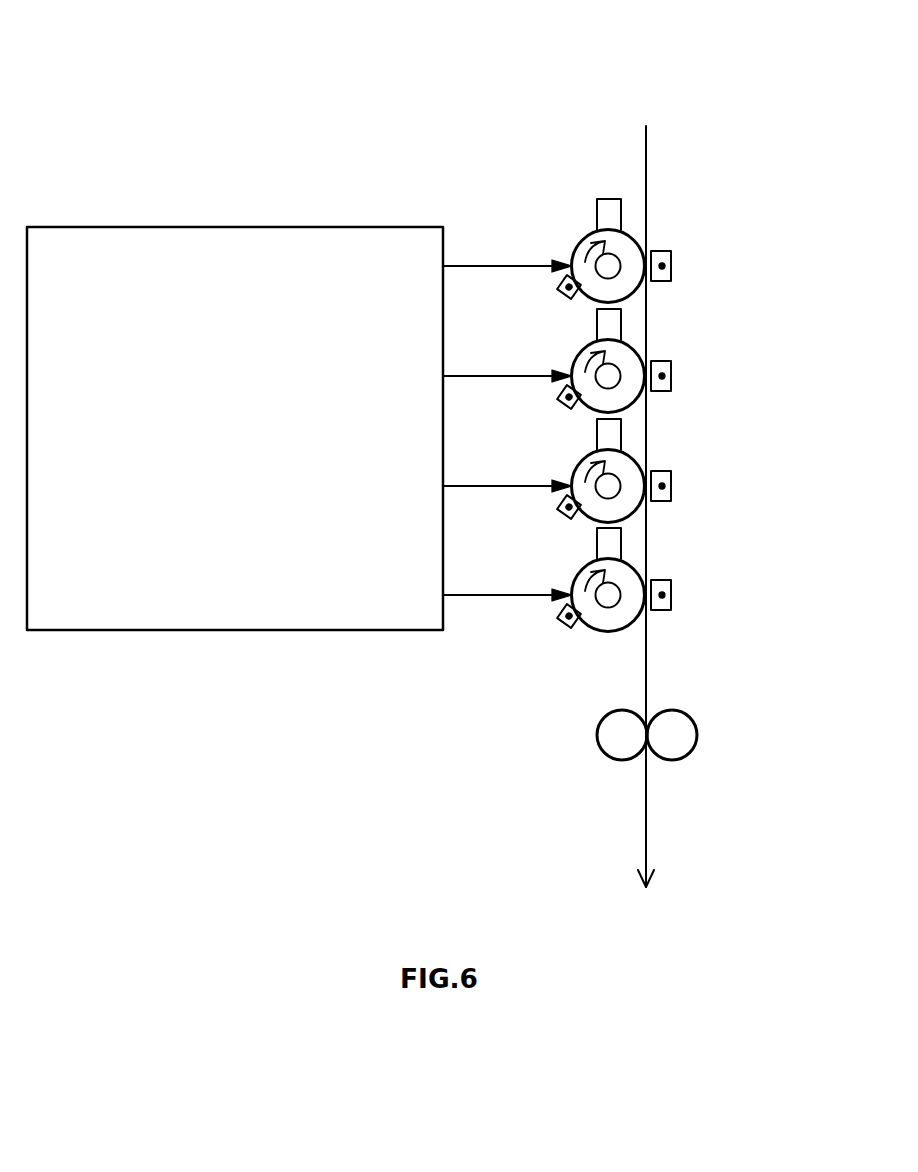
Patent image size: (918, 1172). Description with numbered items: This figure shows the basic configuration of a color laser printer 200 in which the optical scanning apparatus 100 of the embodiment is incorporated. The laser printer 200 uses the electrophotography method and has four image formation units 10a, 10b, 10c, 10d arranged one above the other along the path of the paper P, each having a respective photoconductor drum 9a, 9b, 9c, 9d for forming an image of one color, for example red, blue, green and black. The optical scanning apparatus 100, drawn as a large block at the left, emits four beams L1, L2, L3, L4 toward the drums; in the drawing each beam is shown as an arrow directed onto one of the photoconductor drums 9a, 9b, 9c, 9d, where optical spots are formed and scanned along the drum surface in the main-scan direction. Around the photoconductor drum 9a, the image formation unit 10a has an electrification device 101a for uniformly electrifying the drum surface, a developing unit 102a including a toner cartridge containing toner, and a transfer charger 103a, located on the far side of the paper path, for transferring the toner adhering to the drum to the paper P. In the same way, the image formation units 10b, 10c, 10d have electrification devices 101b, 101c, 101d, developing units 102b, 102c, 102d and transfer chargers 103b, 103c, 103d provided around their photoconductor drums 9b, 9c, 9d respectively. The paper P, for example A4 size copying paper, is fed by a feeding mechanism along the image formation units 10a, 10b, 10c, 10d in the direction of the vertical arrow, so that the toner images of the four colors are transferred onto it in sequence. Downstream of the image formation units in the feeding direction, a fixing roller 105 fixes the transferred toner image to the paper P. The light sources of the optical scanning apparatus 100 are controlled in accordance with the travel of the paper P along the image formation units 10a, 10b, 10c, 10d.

The laser printer 200 is at (530, 107).
The optical scanning apparatus 100 is at (72, 227).
The paper P is at (647, 812).
The fixing roller 105 is at (684, 732).
The image formation unit 10a is at (788, 198).
The image formation unit 10b is at (788, 308).
The image formation unit 10c is at (788, 418).
The image formation unit 10d is at (788, 527).
The photoconductor drum 9a is at (628, 283).
The photoconductor drum 9b is at (628, 393).
The photoconductor drum 9c is at (628, 503).
The photoconductor drum 9d is at (628, 612).
The electrification device 101a is at (560, 290).
The electrification device 101b is at (560, 400).
The electrification device 101c is at (560, 510).
The electrification device 101d is at (560, 619).
The developing unit 102a is at (621, 220).
The developing unit 102b is at (621, 330).
The developing unit 102c is at (621, 440).
The developing unit 102d is at (621, 549).
The transfer charger 103a is at (671, 266).
The transfer charger 103b is at (671, 376).
The transfer charger 103c is at (671, 486).
The transfer charger 103d is at (671, 595).
The light beam L1 is at (473, 485).
The light beam L2 is at (473, 265).
The light beam L3 is at (473, 594).
The light beam L4 is at (473, 375).